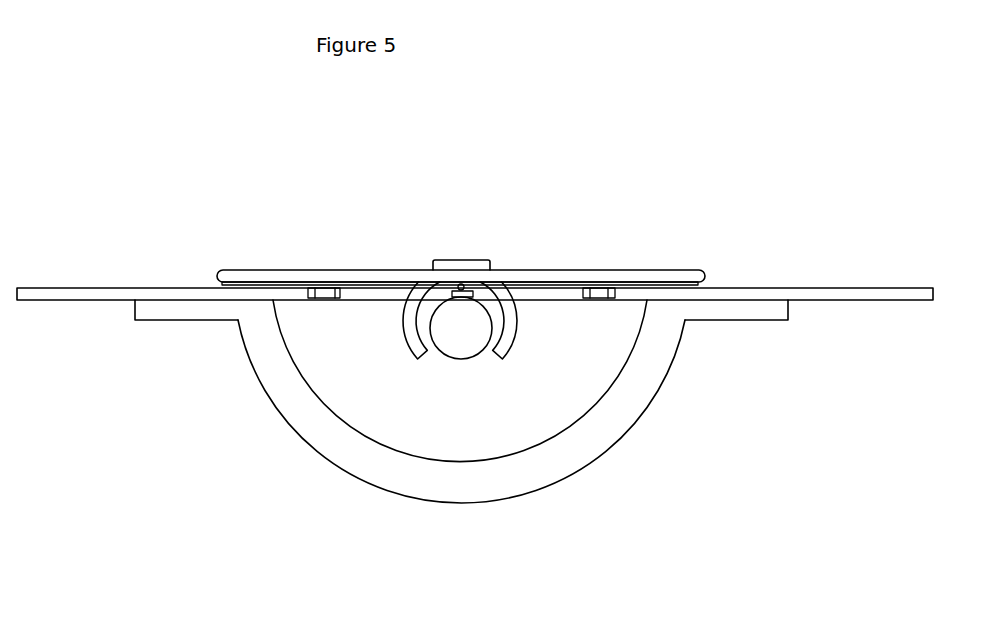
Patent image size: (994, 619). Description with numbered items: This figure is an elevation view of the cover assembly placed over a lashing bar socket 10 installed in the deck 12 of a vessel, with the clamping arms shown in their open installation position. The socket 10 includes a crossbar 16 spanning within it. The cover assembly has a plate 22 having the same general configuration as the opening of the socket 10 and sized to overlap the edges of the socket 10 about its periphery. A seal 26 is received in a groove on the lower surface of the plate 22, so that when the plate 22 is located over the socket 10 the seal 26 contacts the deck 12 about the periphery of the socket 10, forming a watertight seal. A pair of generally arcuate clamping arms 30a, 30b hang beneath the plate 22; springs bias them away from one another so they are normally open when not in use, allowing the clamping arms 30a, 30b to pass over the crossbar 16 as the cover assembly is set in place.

The lashing bar socket 10 is at (637, 428).
The deck 12 is at (68, 288).
The crossbar 16 is at (462, 360).
The plate 22 is at (598, 270).
The seal 26 is at (698, 285).
The clamping arm 30a is at (410, 349).
The clamping arm 30b is at (500, 349).